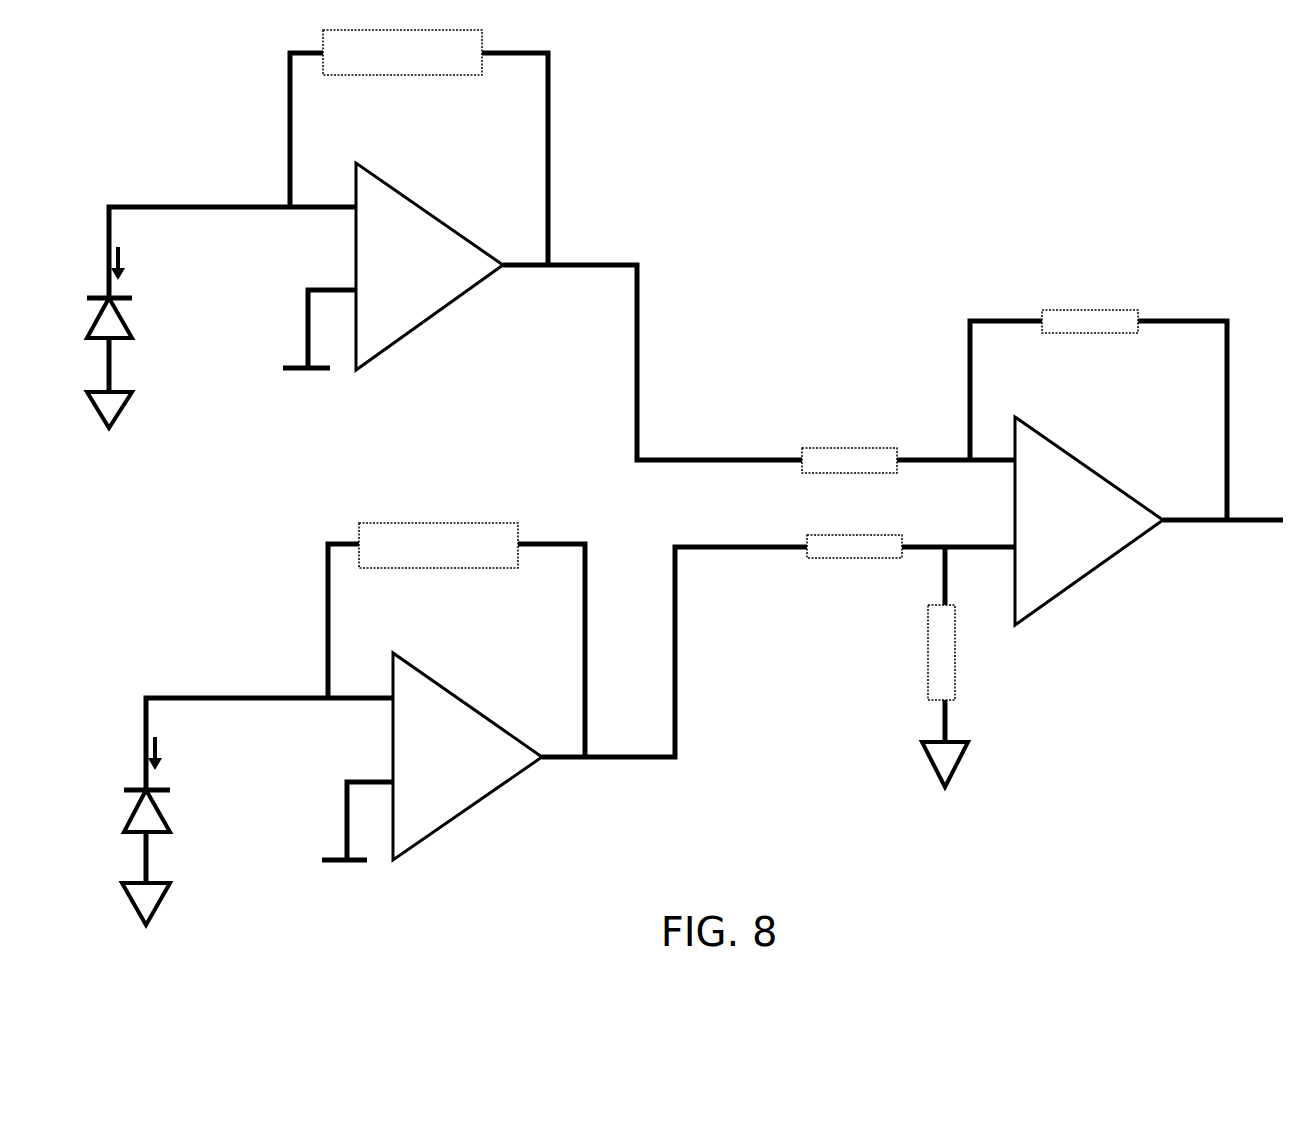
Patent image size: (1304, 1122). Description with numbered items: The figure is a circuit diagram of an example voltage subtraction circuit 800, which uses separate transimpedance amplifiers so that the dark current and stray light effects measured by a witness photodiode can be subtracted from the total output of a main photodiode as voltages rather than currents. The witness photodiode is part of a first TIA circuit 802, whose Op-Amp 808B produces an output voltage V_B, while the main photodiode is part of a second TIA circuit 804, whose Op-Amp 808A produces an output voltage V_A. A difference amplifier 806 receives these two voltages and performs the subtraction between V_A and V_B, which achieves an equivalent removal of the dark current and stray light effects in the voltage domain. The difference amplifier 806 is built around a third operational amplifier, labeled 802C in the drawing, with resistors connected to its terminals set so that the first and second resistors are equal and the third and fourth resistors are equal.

The voltage subtraction circuit 800 is at (1040, 124).
The first TIA circuit 802 is at (196, 72).
The second TIA circuit 804 is at (232, 570).
The difference amplifier 806 is at (909, 328).
The Op-Amp 808B is at (429, 266).
The Op-Amp 808A is at (467, 756).
The difference op-amp 802C is at (1089, 521).